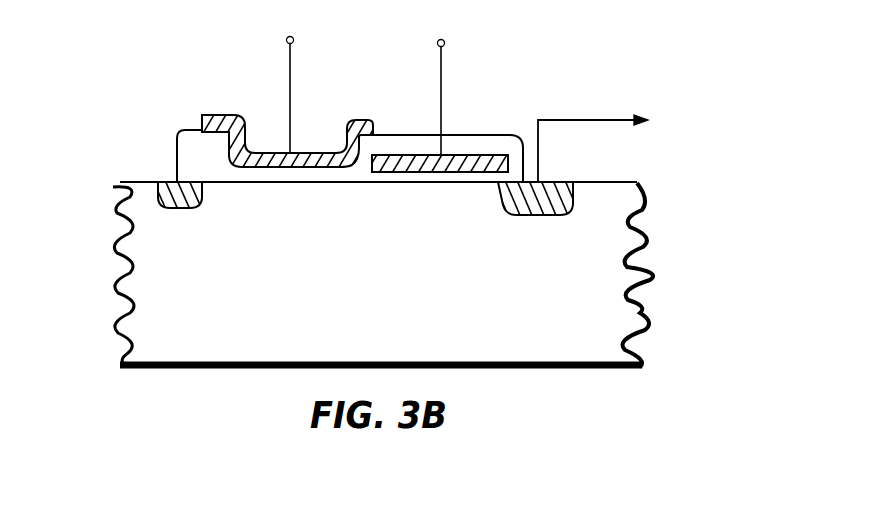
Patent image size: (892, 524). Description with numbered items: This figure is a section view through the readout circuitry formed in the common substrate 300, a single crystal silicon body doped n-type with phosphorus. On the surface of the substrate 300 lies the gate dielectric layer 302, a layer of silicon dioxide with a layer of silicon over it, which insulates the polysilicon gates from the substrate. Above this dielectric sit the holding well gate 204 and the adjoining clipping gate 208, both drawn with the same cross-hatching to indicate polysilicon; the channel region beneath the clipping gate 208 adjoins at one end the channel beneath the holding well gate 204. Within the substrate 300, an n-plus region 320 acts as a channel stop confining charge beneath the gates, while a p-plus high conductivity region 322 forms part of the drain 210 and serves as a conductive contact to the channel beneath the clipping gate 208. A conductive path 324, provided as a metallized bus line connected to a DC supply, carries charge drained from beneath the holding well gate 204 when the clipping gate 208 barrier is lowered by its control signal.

The common substrate 300 is at (620, 293).
The gate dielectric layer 302 is at (193, 148).
The holding well gate 204 is at (303, 152).
The clipping gate 208 is at (458, 155).
The drain 210 is at (572, 183).
The n+ region 320 is at (178, 204).
The p+ high conductivity region 322 is at (547, 215).
The conductive path 324 is at (583, 119).